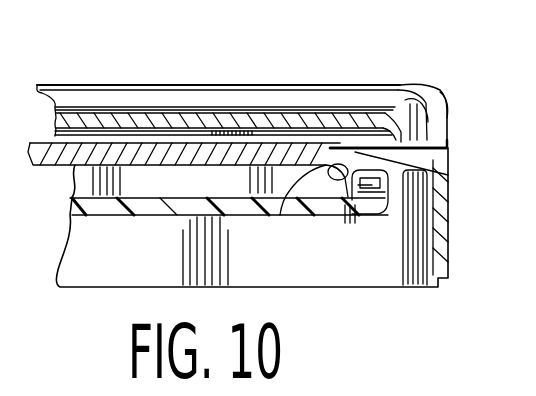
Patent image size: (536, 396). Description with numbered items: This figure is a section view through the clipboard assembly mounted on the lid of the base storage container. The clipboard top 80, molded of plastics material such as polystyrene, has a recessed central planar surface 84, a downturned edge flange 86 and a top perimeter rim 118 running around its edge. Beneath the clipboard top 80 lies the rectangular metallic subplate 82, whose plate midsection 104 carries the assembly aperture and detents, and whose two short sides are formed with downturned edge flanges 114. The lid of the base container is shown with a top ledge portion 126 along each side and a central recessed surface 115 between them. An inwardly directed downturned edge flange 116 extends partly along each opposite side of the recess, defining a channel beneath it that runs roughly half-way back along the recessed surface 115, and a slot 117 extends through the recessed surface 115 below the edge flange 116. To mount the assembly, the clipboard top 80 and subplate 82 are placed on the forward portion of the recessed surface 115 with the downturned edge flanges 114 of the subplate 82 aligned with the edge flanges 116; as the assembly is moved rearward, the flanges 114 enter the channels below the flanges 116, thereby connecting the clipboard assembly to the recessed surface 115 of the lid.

The clipboard top 80 is at (424, 62).
The subplate 82 is at (285, 160).
The recessed central planar surface 84 is at (273, 110).
The downturned edge flange 86 is at (445, 118).
The plate midsection 104 is at (193, 161).
The downturned edge flange 114 is at (353, 177).
The central recessed surface 115 is at (130, 193).
The inwardly directed downturned edge flange 116 is at (342, 165).
The slot 117 is at (365, 205).
The top perimeter rim 118 is at (113, 84).
The top ledge portion 126 is at (358, 110).